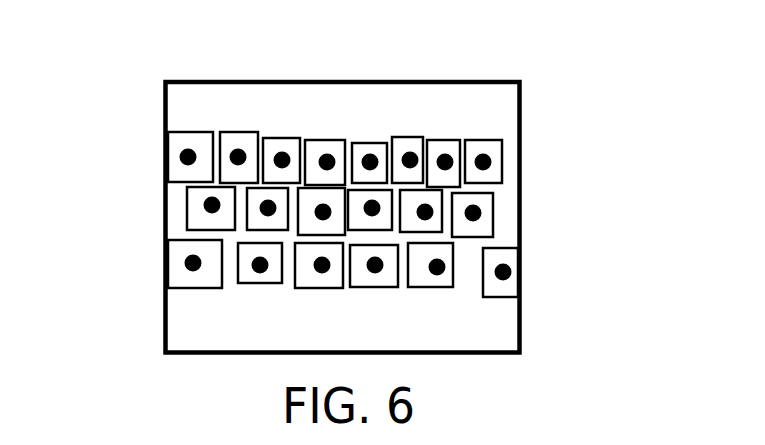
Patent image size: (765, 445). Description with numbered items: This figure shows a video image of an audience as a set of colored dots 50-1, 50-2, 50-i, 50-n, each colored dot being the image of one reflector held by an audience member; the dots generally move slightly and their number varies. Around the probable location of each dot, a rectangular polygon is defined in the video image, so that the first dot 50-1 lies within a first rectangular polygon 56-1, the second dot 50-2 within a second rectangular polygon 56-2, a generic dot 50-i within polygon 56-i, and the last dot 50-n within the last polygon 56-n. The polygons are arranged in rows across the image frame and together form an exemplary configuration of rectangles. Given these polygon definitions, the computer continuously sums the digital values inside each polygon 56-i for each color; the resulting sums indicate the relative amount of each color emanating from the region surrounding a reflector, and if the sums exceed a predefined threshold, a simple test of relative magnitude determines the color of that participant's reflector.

The rectangular polygon 56-1 is at (190, 131).
The rectangular polygon 56-2 is at (223, 131).
The rectangular polygon 56-i is at (495, 205).
The rectangular polygon 56-n is at (498, 297).
The colored dot 50-1 is at (187, 157).
The colored dot 50-2 is at (238, 157).
The colored dot 50-i is at (473, 213).
The colored dot 50-n is at (503, 270).